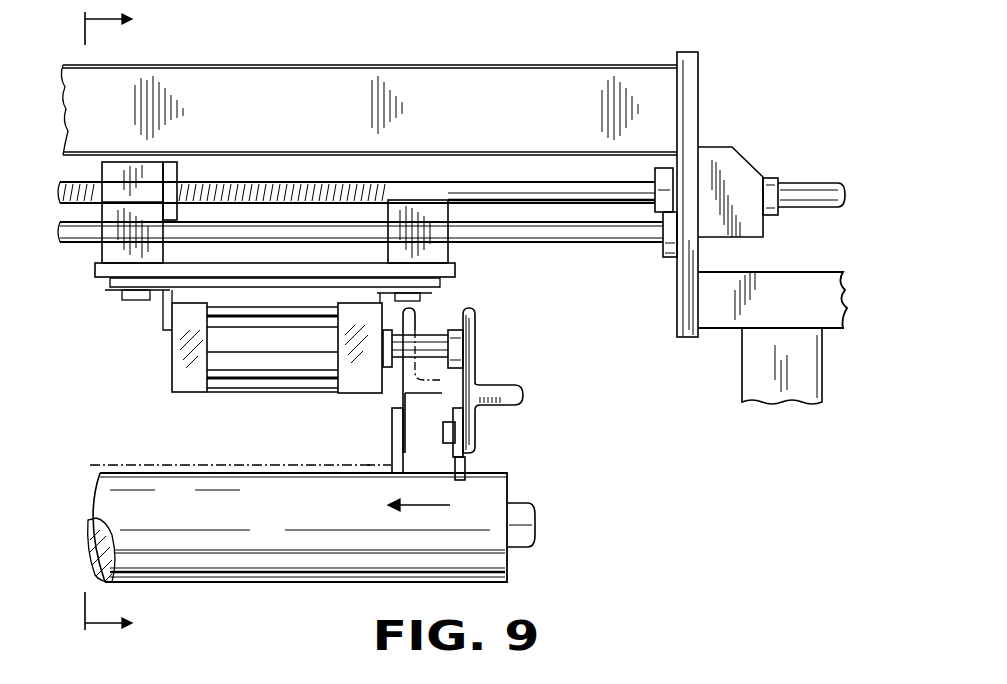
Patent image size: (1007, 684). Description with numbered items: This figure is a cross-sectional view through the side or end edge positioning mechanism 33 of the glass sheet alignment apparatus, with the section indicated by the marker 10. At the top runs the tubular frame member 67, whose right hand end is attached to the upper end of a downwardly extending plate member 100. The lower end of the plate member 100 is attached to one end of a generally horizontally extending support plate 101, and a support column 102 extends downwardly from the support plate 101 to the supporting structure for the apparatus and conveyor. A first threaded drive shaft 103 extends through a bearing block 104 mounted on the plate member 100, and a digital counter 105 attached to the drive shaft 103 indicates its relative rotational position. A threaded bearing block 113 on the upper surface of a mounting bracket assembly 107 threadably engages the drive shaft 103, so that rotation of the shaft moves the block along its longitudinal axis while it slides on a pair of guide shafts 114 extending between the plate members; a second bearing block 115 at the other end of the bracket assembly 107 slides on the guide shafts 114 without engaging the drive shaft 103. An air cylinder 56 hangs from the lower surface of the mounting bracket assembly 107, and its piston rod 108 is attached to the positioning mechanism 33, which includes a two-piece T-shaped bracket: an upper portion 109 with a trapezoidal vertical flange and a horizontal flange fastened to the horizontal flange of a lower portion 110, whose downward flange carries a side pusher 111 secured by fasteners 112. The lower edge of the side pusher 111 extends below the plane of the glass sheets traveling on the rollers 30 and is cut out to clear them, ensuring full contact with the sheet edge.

The section line indicator 10 is at (93, 327).
The rollers 30 is at (232, 572).
The side or end edge positioning mechanism 33 is at (523, 360).
The air cylinder 56 is at (230, 375).
The tubular frame member 67 is at (368, 80).
The plate member 100 is at (690, 77).
The support plate 101 is at (815, 280).
The support column 102 is at (765, 370).
The first threaded drive shaft 103 is at (520, 190).
The bearing block 104 is at (662, 182).
The digital counter 105 is at (733, 172).
The mounting bracket assembly 107 is at (110, 288).
The piston rod 108 is at (425, 345).
The upper portion of the bracket 109 is at (470, 350).
The lower portion of the bracket 110 is at (468, 437).
The side pusher 111 is at (470, 465).
The fasteners 112 is at (440, 428).
The threaded bearing block 113 is at (118, 243).
The guide shafts 114 is at (620, 238).
The bearing block 115 is at (418, 205).